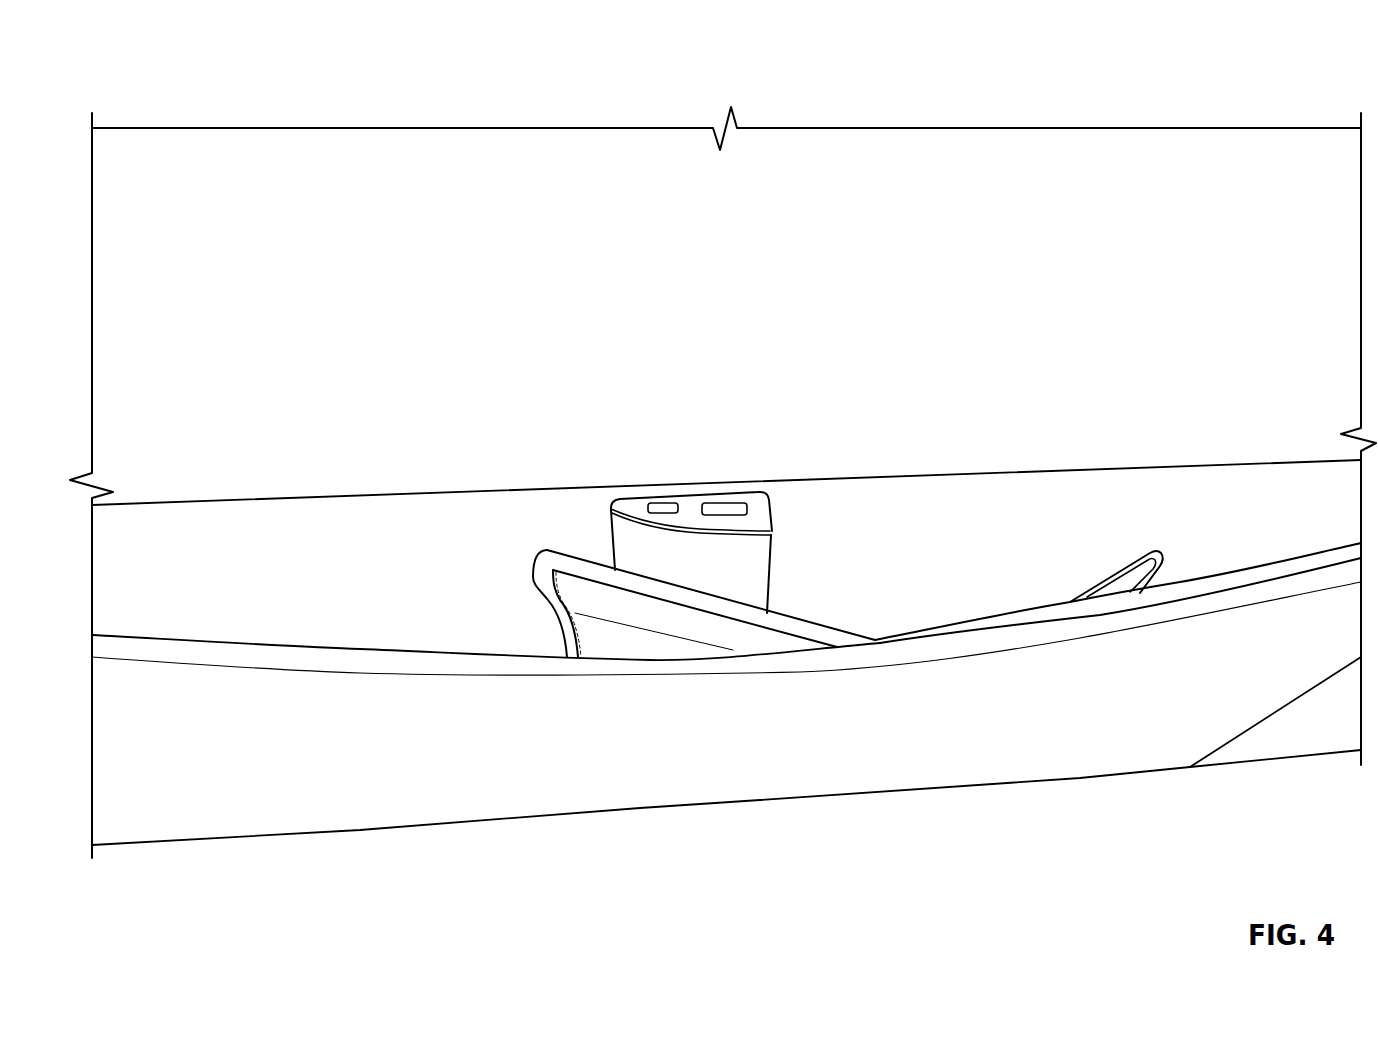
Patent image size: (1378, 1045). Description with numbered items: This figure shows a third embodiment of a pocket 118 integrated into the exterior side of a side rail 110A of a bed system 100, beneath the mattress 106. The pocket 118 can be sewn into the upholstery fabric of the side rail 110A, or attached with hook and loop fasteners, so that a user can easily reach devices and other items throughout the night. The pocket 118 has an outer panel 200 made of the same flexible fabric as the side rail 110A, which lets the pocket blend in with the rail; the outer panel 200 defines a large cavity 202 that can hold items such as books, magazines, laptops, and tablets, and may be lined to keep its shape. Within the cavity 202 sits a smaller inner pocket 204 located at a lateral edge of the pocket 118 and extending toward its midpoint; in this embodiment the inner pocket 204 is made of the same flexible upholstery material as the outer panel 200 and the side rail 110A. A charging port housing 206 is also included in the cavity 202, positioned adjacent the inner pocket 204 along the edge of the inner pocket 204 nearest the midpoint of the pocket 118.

The bed system 100 is at (150, 66).
The mattress 106 is at (1078, 197).
The side rail 110A is at (1330, 489).
The pocket 118 is at (867, 507).
The outer panel 200 is at (666, 733).
The cavity 202 is at (374, 546).
The inner pocket 204 is at (935, 584).
The charging port housing 206 is at (693, 490).